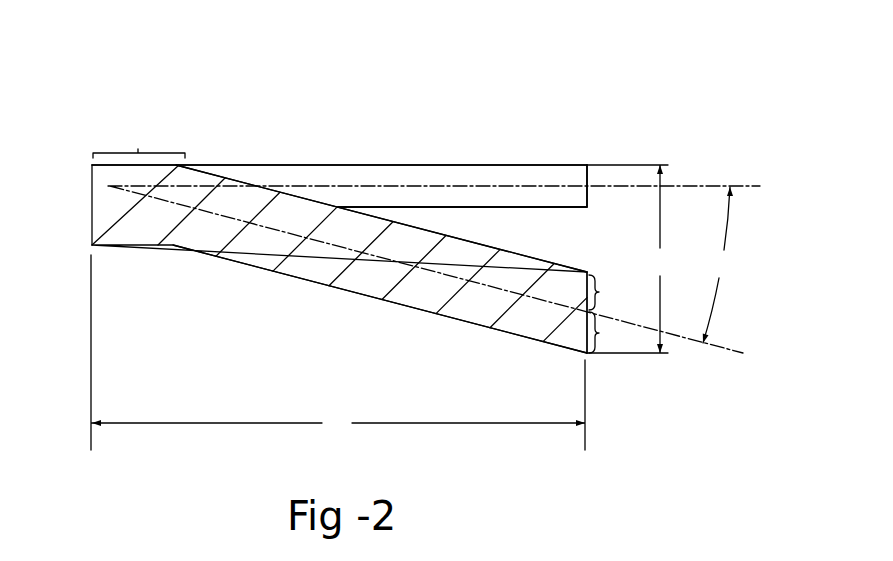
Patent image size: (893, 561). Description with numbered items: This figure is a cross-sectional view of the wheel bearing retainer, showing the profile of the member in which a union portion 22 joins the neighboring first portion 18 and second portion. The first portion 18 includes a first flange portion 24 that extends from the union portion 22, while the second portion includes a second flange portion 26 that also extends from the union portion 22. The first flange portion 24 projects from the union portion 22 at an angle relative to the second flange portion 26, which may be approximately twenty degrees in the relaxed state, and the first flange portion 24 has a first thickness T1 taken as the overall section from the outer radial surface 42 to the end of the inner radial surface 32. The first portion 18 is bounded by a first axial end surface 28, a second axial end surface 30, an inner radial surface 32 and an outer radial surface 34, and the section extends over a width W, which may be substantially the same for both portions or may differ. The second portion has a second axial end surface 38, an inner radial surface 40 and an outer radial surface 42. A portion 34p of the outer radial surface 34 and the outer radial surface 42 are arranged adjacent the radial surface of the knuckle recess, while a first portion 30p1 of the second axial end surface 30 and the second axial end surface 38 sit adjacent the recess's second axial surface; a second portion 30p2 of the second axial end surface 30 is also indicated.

The first portion 18 is at (158, 65).
The union portion 22 is at (123, 175).
The first flange portion 24 is at (343, 332).
The second flange portion 26 is at (432, 153).
The first axial end surface 28 is at (92, 190).
The second axial end surface 30 is at (590, 340).
The first portion of the second axial end surface 30p1 is at (615, 292).
The second end face portion 30p2 is at (616, 332).
The inner radial surface 32 is at (305, 280).
The outer radial surface 34 is at (302, 193).
The portion of the outer radial surface 34p is at (138, 153).
The second axial end surface 38 is at (592, 194).
The inner radial surface 40 is at (538, 208).
The outer radial surface 42 is at (522, 164).
The width W is at (338, 352).
The first thickness T1 is at (628, 259).